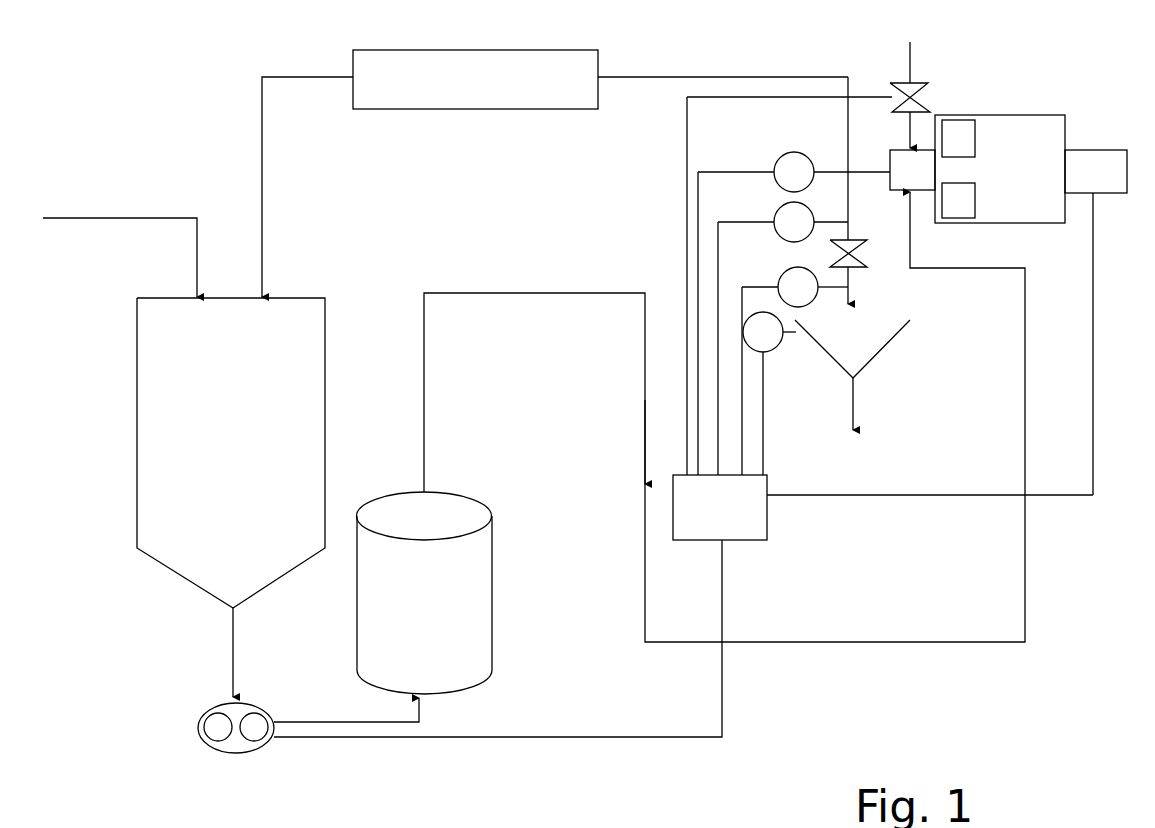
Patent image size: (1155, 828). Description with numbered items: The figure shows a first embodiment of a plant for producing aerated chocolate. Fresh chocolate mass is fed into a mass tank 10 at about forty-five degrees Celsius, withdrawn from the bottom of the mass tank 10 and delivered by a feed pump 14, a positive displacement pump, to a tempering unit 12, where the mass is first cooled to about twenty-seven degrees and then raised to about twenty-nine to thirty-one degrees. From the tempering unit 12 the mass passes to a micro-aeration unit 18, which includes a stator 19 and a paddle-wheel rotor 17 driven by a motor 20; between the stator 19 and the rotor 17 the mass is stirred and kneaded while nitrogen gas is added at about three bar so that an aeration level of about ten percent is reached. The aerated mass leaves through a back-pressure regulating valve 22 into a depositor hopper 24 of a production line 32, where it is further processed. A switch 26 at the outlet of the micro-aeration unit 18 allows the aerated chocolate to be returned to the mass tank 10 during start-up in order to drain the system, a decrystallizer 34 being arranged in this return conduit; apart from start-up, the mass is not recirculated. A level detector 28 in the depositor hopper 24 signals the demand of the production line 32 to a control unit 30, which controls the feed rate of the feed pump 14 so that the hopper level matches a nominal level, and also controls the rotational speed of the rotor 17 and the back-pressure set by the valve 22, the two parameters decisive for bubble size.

The mass tank 10 is at (198, 387).
The tempering unit 12 is at (691, 443).
The feed pump 14 is at (460, 665).
The rotor 17 is at (957, 216).
The micro-aeration unit 18 is at (1000, 169).
The stator 19 is at (831, 103).
The motor 20 is at (1096, 303).
The back-pressure regulating valve 22 is at (862, 190).
The depositor hopper 24 is at (893, 343).
The switch 26 is at (846, 165).
The level detector 28 is at (800, 340).
The control unit 30 is at (883, 318).
The production line 32 is at (855, 424).
The decrystallizer 34 is at (600, 79).